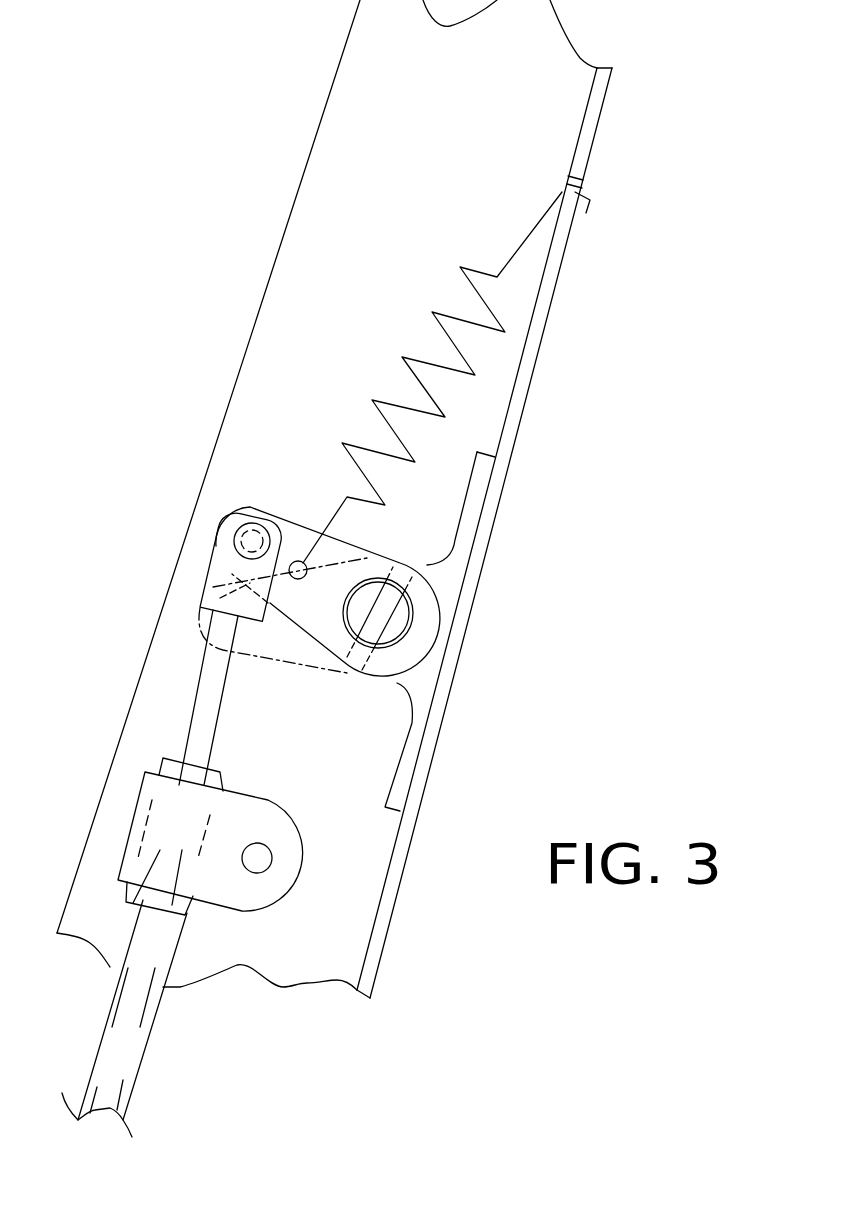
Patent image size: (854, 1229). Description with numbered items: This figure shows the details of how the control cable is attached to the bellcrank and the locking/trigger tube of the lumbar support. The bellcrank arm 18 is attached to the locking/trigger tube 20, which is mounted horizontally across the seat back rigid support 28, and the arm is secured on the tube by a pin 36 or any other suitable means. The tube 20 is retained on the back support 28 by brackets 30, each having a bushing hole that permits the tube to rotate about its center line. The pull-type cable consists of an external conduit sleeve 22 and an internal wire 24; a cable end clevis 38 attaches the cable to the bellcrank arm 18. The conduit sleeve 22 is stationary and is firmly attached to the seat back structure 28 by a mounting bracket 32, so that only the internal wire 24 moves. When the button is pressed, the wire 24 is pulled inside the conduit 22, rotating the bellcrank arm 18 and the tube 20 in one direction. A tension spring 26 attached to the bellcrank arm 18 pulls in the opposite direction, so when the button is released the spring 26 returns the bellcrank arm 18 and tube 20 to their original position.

The bellcrank arm 18 is at (297, 515).
The locking/trigger tube 20 is at (413, 625).
The external conduit sleeve 22 is at (143, 1052).
The internal wire 24 is at (216, 730).
The tension spring 26 is at (402, 357).
The seat back rigid support 28 is at (574, 150).
The bracket 30 is at (389, 787).
The mounting bracket 32 is at (270, 913).
The pin 36 is at (410, 562).
The cable end clevis 38 is at (217, 570).